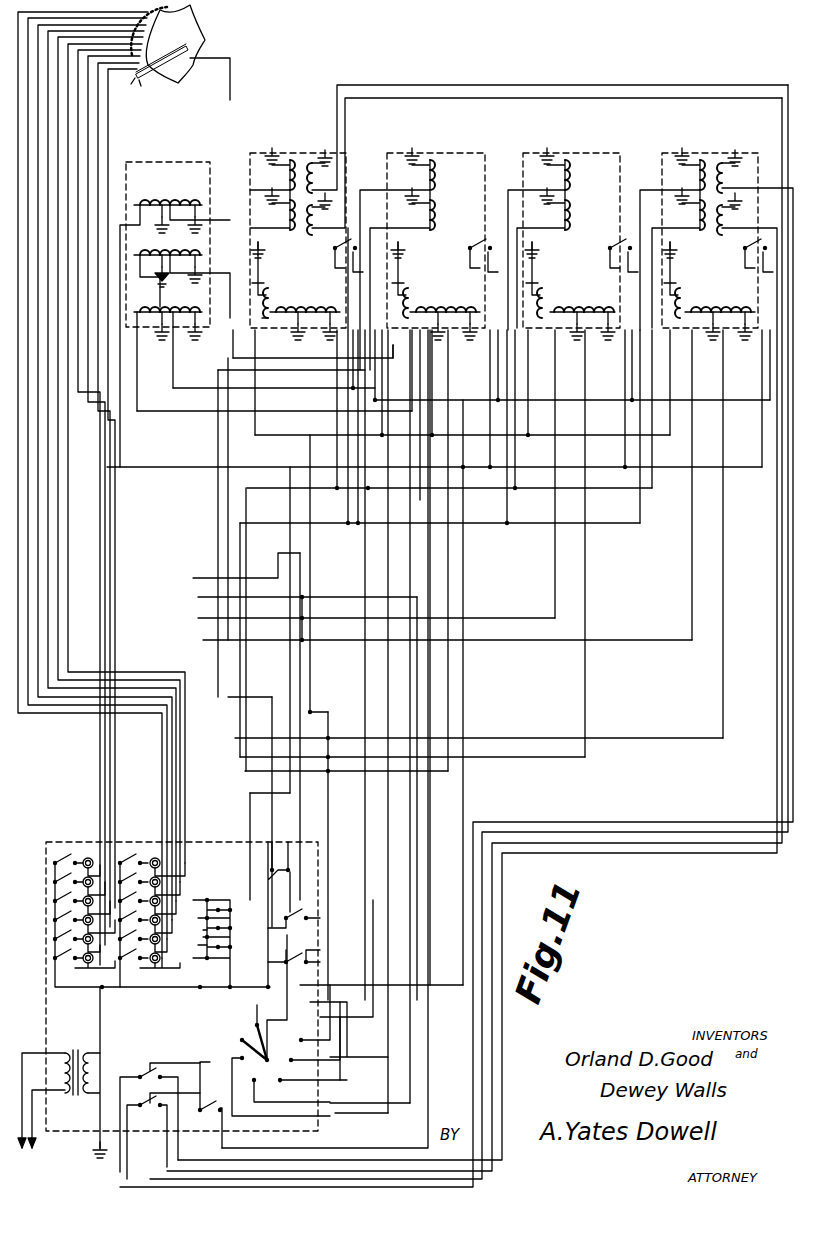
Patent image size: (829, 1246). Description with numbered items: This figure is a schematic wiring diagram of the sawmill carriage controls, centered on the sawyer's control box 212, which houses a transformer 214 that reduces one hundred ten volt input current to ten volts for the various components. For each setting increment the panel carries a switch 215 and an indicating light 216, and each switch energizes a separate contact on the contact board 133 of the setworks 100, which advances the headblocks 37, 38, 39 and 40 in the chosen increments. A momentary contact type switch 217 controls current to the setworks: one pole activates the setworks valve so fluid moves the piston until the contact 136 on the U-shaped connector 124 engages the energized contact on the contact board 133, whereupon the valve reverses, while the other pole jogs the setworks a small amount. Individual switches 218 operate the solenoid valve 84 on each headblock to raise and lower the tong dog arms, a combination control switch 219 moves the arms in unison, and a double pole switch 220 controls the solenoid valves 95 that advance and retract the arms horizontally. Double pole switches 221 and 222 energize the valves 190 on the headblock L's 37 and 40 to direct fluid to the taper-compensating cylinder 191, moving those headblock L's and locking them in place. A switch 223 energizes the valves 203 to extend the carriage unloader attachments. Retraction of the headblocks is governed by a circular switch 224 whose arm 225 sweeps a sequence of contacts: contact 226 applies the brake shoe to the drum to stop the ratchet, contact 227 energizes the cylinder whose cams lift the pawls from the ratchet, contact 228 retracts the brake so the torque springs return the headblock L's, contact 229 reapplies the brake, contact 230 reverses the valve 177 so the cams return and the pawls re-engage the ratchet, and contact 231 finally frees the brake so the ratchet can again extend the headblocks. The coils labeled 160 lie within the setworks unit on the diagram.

The contact board 133 is at (185, 15).
The U-shaped connector 124 is at (131, 84).
The contact 136 is at (141, 86).
The setworks 100 is at (160, 162).
The coil 160 is at (150, 225).
The valve 177 is at (145, 325).
The headblock L 37 is at (258, 153).
The headblock 38 is at (395, 153).
The headblock 39 is at (590, 153).
The headblock L 40 is at (660, 158).
The solenoid valve 95 is at (290, 160).
The valve 190 is at (312, 163).
The valve 203 is at (278, 260).
The cylinder 191 is at (326, 246).
The solenoid valve 84 is at (305, 312).
The control box 212 is at (46, 1005).
The transformer 214 is at (70, 1050).
The switch 215 is at (50, 855).
The indicating light 216 is at (88, 858).
The momentary contact type switch 217 is at (268, 895).
The switch 218 is at (210, 895).
The combination control switch 219 is at (305, 905).
The double pole switch 220 is at (300, 965).
The double pole switch 221 is at (145, 1060).
The double pole switch 222 is at (145, 1108).
The switch 223 is at (205, 1115).
The circular switch 224 is at (240, 1035).
The arm 225 is at (242, 1038).
The contact 226 is at (265, 1011).
The contact 227 is at (291, 1058).
The contact 228 is at (293, 1030).
The contact 229 is at (272, 1074).
The contact 230 is at (246, 1072).
The contact 231 is at (242, 1044).